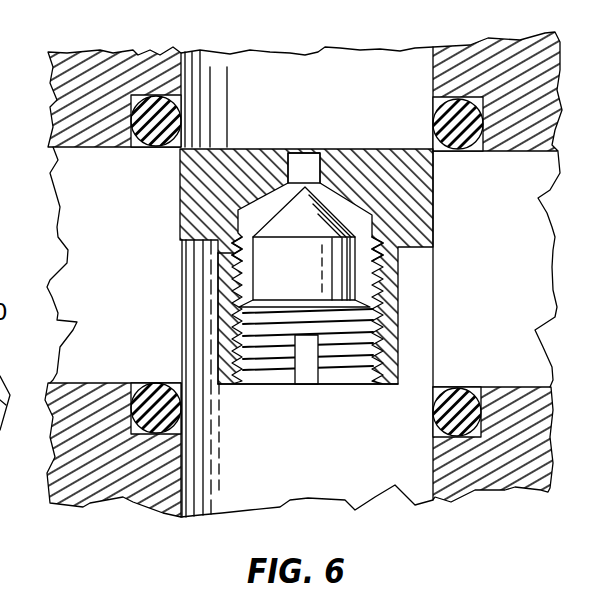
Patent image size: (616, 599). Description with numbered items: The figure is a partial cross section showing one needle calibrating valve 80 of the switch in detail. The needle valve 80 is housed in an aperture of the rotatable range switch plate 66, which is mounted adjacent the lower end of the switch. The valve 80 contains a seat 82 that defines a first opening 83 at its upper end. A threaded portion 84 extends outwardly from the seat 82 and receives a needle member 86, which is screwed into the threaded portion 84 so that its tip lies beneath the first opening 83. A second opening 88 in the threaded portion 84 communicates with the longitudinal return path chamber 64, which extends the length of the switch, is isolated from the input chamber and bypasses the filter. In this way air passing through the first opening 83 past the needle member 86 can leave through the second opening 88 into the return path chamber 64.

The return path chamber 64 is at (318, 63).
The range switch plate 66 is at (82, 190).
The needle valve 80 is at (305, 393).
The seat 82 is at (230, 160).
The first opening 83 is at (303, 150).
The threaded portion 84 is at (233, 287).
The needle member 86 is at (327, 268).
The second opening 88 is at (228, 268).